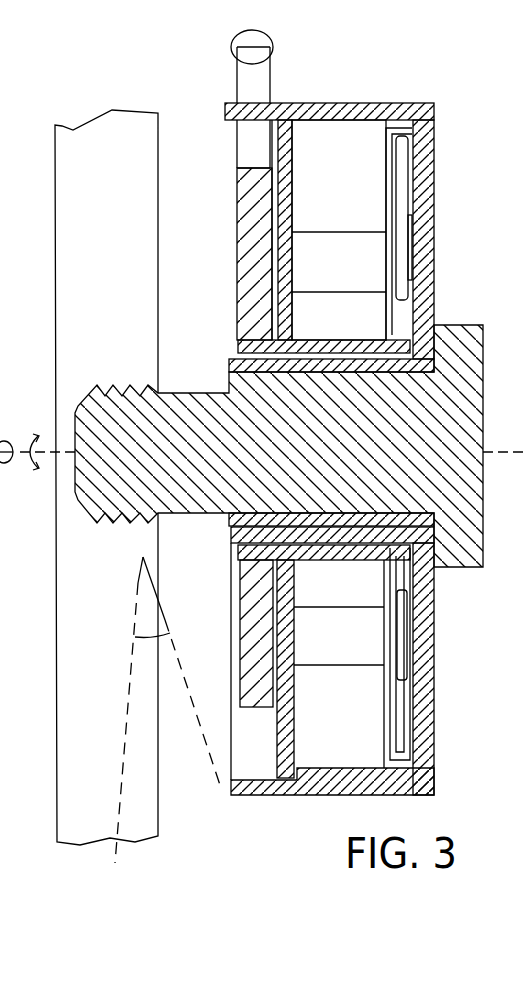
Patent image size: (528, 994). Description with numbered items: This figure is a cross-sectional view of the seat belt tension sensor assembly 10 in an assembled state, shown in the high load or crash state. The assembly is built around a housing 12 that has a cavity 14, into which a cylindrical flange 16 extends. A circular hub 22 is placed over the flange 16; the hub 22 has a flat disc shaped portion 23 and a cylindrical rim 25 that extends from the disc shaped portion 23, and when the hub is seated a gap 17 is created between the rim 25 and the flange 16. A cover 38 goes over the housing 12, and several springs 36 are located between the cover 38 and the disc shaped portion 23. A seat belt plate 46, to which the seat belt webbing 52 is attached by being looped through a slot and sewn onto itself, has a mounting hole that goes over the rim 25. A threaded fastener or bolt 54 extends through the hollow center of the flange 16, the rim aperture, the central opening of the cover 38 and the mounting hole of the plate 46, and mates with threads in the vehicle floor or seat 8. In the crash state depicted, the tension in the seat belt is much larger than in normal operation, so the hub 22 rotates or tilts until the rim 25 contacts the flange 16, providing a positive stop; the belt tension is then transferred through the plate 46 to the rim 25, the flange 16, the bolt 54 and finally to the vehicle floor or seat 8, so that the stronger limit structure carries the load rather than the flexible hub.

The vehicle seat or floor 8 is at (92, 617).
The seat belt tension sensor assembly 10 is at (178, 88).
The housing 12 is at (420, 103).
The cavity 14 is at (363, 133).
The cylindrical flange 16 is at (232, 533).
The gap 17 is at (240, 352).
The circular hub 22 is at (402, 232).
The disc shaped portion 23 is at (384, 652).
The cylindrical rim 25 is at (238, 548).
The springs 36 is at (368, 230).
The cover 38 is at (285, 175).
The seat belt plate 46 is at (235, 197).
The seat belt webbing 52 is at (234, 38).
The fastener or bolt 54 is at (484, 350).